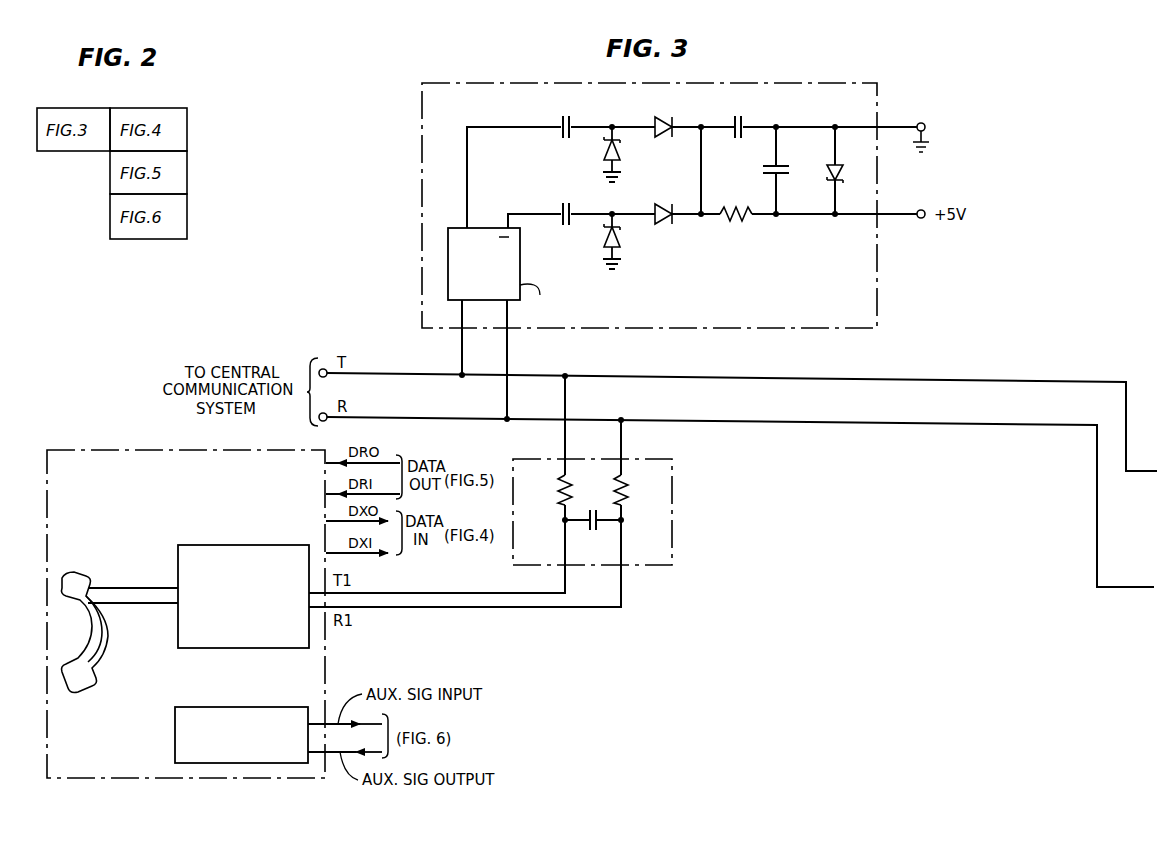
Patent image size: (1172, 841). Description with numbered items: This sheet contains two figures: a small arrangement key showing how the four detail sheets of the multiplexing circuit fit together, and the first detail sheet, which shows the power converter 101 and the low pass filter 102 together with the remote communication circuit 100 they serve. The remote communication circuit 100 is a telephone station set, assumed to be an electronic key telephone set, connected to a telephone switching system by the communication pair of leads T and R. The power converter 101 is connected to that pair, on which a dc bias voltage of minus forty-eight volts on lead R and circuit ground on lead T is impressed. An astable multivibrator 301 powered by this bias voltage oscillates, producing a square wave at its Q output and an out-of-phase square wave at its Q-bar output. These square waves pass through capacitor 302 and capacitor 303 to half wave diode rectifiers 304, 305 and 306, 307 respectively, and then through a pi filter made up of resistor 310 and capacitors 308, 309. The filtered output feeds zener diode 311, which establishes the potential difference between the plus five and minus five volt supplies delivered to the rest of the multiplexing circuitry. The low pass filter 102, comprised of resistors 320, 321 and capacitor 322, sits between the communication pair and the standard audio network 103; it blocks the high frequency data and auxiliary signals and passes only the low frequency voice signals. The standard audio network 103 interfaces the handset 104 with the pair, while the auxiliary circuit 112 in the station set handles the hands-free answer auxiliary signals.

The remote communication circuit 100 is at (120, 450).
The power converter 101 is at (877, 300).
The low pass filter 102 is at (672, 540).
The standard audio network 103 is at (232, 545).
The handset 104 is at (88, 656).
The auxiliary circuit 112 is at (232, 708).
The astable multivibrator 301 is at (521, 268).
The capacitor 302 is at (563, 120).
The capacitor 303 is at (563, 202).
The half wave diode rectifier 304 is at (614, 147).
The half wave diode rectifier 305 is at (661, 120).
The half wave diode rectifier 306 is at (618, 248).
The half wave diode rectifier 307 is at (666, 226).
The capacitor 308 is at (744, 118).
The capacitor 309 is at (760, 170).
The resistor 310 is at (742, 222).
The zener diode 311 is at (826, 172).
The resistor 320 is at (554, 502).
The resistor 321 is at (628, 500).
The capacitor 322 is at (592, 532).